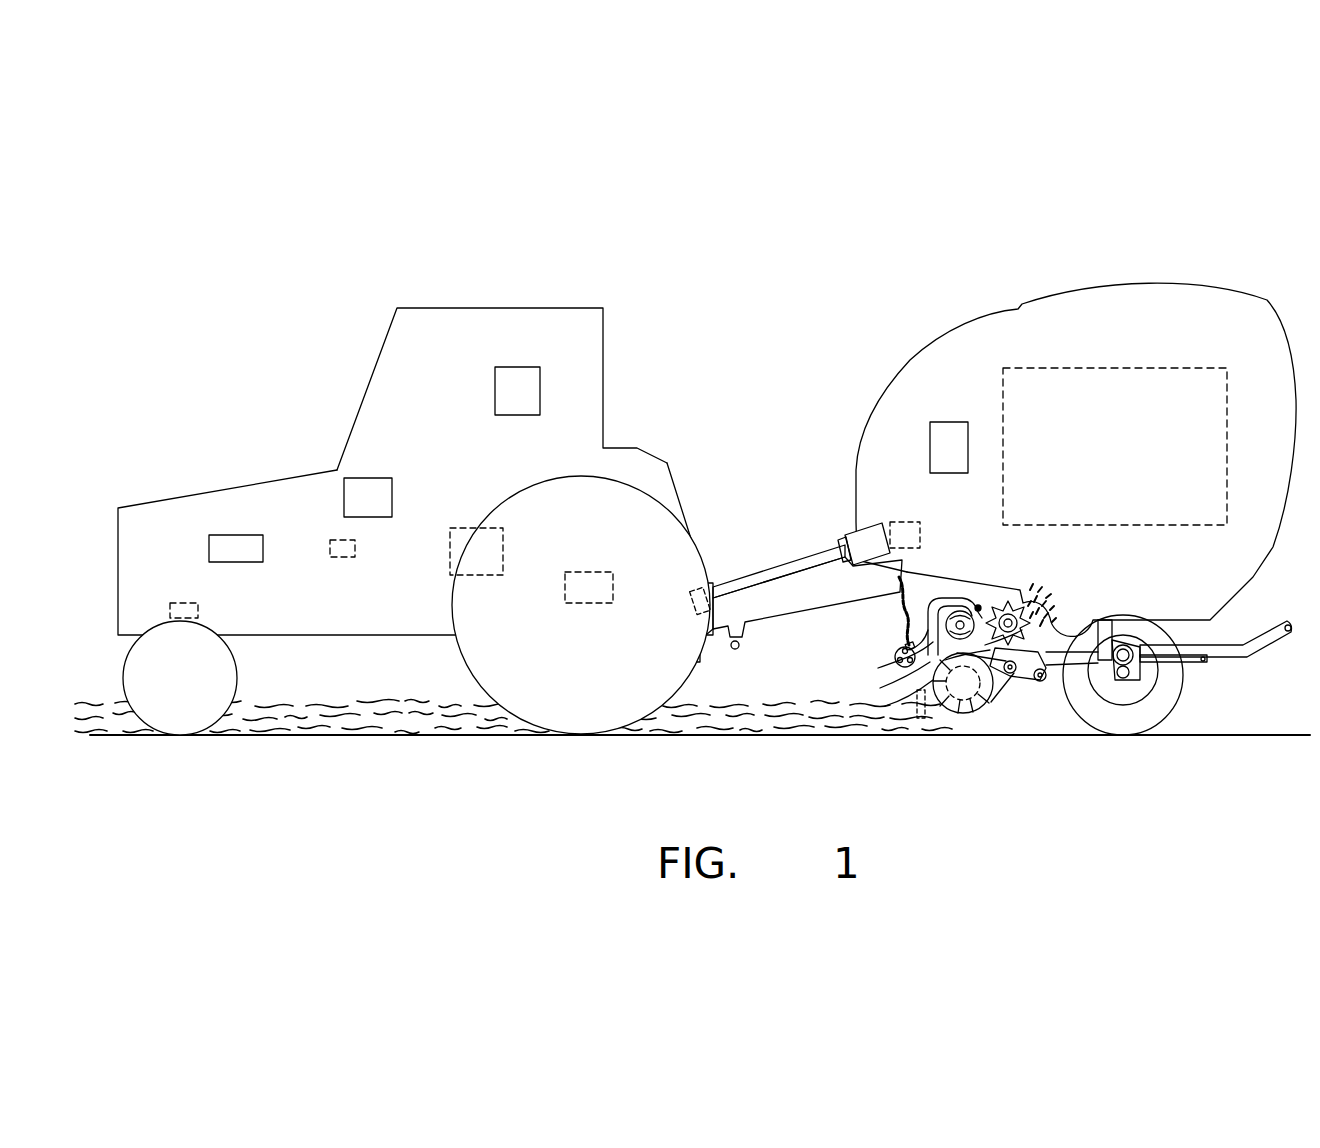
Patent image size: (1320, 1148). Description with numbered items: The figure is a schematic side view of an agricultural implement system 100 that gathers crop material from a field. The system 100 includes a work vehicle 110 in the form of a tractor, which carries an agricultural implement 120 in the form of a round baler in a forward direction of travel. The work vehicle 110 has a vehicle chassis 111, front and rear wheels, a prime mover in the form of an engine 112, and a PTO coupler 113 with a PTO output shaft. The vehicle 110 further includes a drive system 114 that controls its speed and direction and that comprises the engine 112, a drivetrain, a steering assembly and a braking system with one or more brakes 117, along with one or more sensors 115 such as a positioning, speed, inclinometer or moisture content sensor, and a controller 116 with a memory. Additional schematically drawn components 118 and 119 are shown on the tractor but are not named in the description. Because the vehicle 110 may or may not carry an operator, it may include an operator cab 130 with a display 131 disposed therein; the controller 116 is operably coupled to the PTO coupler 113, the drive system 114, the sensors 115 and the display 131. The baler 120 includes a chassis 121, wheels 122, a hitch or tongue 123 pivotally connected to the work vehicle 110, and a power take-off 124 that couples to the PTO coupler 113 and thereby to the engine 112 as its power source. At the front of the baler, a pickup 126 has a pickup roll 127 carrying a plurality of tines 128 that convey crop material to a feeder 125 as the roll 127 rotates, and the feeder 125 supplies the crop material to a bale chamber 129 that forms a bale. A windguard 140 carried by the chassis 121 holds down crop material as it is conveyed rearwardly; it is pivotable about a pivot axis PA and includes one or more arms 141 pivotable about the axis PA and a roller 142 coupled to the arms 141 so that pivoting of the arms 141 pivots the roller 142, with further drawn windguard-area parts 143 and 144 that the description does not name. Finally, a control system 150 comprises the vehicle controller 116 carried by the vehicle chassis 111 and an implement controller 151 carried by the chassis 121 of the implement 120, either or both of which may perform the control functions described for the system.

The agricultural implement system 100 is at (780, 223).
The work vehicle 110 is at (590, 297).
The vehicle chassis 111 is at (321, 636).
The engine 112 is at (228, 535).
The PTO coupler 113 is at (721, 583).
The drive system 114 is at (289, 533).
The sensors 115 is at (344, 558).
The controller 116 is at (384, 478).
The brakes 117 is at (185, 603).
The sensor 118 is at (469, 528).
The hitch sensor 119 is at (693, 606).
The agricultural implement 120 is at (998, 295).
The chassis 121 is at (856, 492).
The wheels 122 is at (1178, 699).
The tongue 123 is at (813, 615).
The power take-off 124 is at (843, 528).
The feeder 125 is at (1030, 664).
The pickup 126 is at (994, 705).
The pickup roll 127 is at (975, 722).
The tines 128 is at (910, 522).
The bale chamber 129 is at (1120, 368).
The operator cab 130 is at (379, 352).
The display 131 is at (517, 367).
The windguard 140 is at (943, 585).
The arms 141 is at (963, 610).
The roller 142 is at (897, 660).
The star wheel 143 is at (981, 606).
The chain 144 is at (906, 648).
The control system 150 is at (918, 400).
The implement controller 151 is at (930, 432).
The pivot axis PA is at (1000, 605).